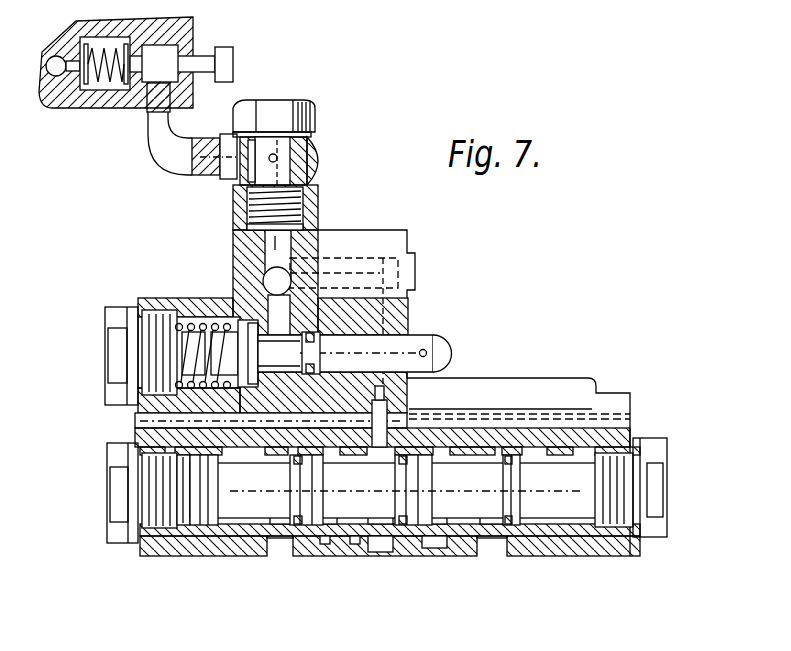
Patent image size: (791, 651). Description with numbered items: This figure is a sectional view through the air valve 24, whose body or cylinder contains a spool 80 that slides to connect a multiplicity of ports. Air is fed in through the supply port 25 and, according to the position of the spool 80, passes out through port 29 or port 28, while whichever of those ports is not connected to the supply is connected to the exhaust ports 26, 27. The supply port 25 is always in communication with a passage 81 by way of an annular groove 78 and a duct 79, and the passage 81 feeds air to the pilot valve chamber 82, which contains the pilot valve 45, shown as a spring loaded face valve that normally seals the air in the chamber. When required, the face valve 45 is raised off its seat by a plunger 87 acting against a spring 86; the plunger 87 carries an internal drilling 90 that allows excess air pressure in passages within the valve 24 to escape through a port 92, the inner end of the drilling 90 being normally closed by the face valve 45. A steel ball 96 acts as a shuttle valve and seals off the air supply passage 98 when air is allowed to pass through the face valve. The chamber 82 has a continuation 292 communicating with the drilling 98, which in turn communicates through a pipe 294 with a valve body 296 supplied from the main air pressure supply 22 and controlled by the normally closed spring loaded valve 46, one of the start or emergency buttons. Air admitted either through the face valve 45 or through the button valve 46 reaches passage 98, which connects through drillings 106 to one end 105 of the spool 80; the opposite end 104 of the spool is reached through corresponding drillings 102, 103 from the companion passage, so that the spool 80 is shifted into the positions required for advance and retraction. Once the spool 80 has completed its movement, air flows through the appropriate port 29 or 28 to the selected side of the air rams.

The main air pressure supply 22 is at (71, 88).
The valve body 296 is at (118, 97).
The normally closed spring loaded valve 46 is at (233, 61).
The pipe 294 is at (161, 156).
The air supply passage 98 is at (248, 243).
The drillings 106 is at (408, 285).
The steel ball 96 is at (262, 280).
The pilot valve chamber 82 is at (194, 319).
The spring 86 is at (201, 370).
The pilot valve 45 is at (242, 310).
The internal drilling 90 is at (412, 347).
The plunger 87 is at (447, 358).
The port 92 is at (428, 352).
The continuation 292 is at (290, 373).
The air valve 24 is at (603, 432).
The passage 81 is at (227, 424).
The end of the spool 104 is at (150, 444).
The duct 79 is at (378, 412).
The exhaust port 26 is at (285, 549).
The exhaust port 27 is at (490, 548).
The port 28 is at (330, 548).
The air supply port 25 is at (382, 548).
The port 29 is at (428, 547).
The annular groove 78 is at (390, 552).
The drilling 102 is at (183, 531).
The drilling 103 is at (193, 531).
The spool 80 is at (250, 507).
The end of the spool 105 is at (562, 513).